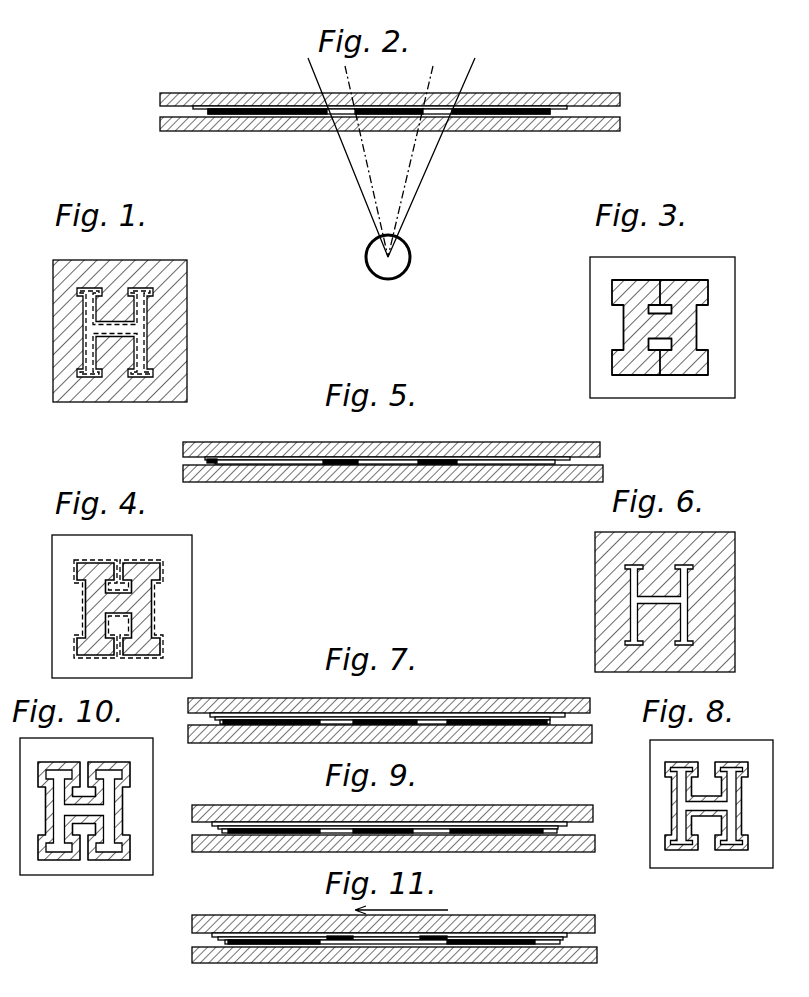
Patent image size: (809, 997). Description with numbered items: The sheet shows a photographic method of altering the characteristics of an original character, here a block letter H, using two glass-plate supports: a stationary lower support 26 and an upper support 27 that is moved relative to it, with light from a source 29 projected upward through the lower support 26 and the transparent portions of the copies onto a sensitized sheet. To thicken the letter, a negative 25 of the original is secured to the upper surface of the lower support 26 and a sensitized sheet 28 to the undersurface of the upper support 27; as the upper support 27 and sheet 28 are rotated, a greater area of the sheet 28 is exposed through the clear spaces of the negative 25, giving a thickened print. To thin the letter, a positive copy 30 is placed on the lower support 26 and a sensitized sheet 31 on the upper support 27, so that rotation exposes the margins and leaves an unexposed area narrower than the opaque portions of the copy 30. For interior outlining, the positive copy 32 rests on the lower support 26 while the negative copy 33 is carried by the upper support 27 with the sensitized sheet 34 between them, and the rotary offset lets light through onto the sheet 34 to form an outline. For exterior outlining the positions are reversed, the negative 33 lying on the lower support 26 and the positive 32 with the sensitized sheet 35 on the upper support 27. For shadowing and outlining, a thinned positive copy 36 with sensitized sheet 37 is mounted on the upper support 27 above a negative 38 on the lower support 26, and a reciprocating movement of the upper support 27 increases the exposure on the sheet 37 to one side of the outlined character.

In FIG. 2, the negative 25 is at (520, 116).
In FIG. 1, the negative 25 is at (180, 300).
In FIG. 2, the lower support 26 is at (600, 124).
In FIG. 5, the lower support 26 is at (550, 467).
In FIG. 7, the lower support 26 is at (560, 735).
In FIG. 9, the lower support 26 is at (560, 845).
In FIG. 11, the lower support 26 is at (565, 960).
In FIG. 2, the upper support 27 is at (560, 98).
In FIG. 5, the upper support 27 is at (520, 445).
In FIG. 7, the upper support 27 is at (558, 701).
In FIG. 9, the upper support 27 is at (560, 808).
In FIG. 11, the upper support 27 is at (580, 916).
In FIG. 2, the sensitized sheet 28 is at (498, 105).
In FIG. 3, the sensitized sheet 28 is at (591, 298).
In FIG. 2, the light source 29 is at (413, 254).
In FIG. 5, the positive copy 30 is at (475, 465).
In FIG. 4, the positive copy 30 is at (175, 583).
In FIG. 5, the sensitized sheet 31 is at (273, 457).
In FIG. 6, the sensitized sheet 31 is at (598, 590).
In FIG. 7, the positive copy 32 is at (470, 724).
In FIG. 9, the positive copy 32 is at (483, 822).
In FIG. 7, the negative copy 33 is at (492, 713).
In FIG. 9, the negative copy 33 is at (492, 834).
In FIG. 7, the sensitized sheet 34 is at (262, 716).
In FIG. 10, the sensitized sheet 34 is at (142, 778).
In FIG. 8, the sensitized sheet 35 is at (703, 855).
In FIG. 9, the sensitized sheet 35 is at (265, 823).
In FIG. 11, the positive copy 36 is at (493, 936).
In FIG. 11, the sensitized sheet 37 is at (262, 933).
In FIG. 11, the negative 38 is at (495, 946).